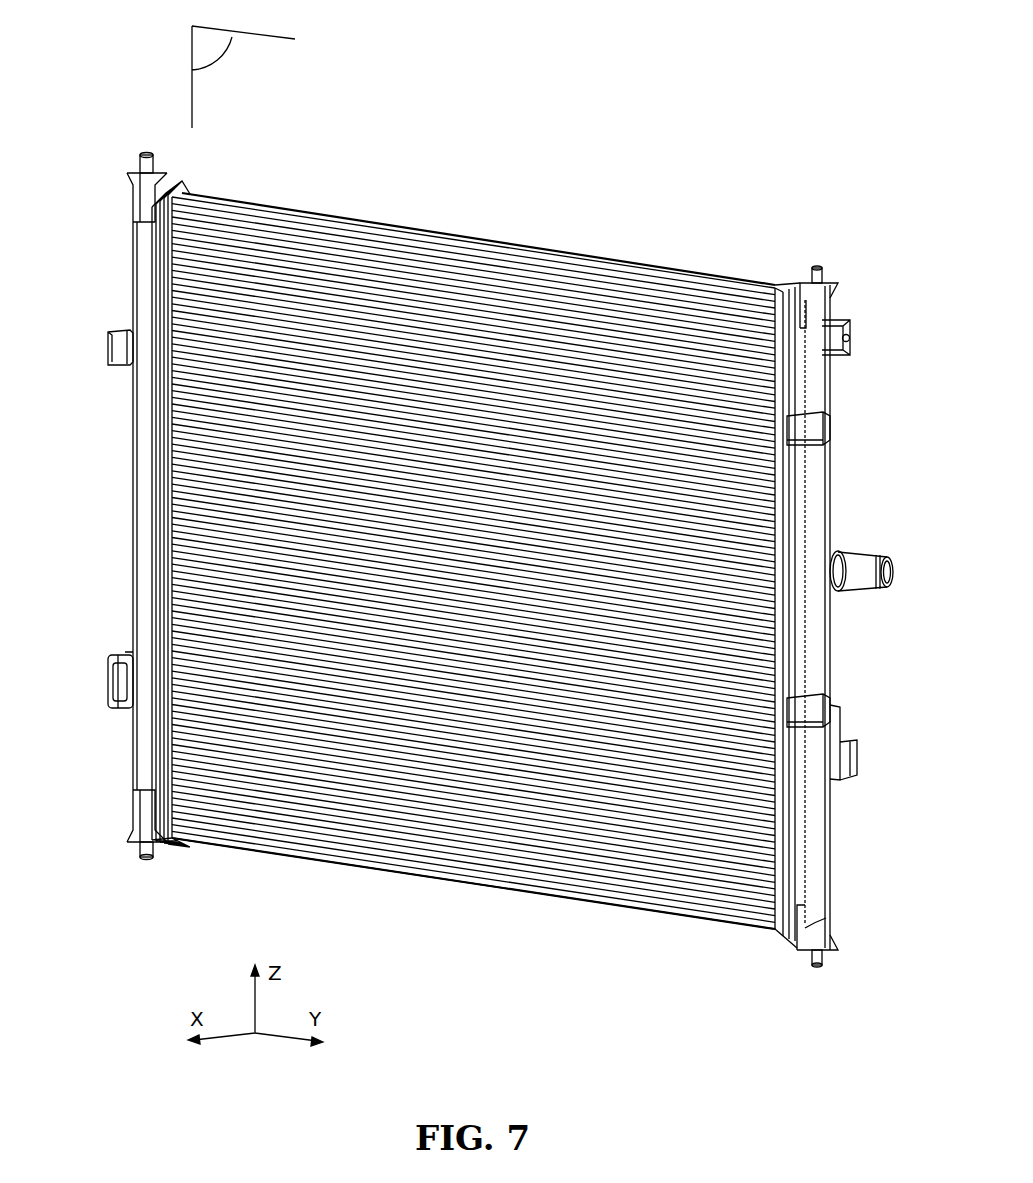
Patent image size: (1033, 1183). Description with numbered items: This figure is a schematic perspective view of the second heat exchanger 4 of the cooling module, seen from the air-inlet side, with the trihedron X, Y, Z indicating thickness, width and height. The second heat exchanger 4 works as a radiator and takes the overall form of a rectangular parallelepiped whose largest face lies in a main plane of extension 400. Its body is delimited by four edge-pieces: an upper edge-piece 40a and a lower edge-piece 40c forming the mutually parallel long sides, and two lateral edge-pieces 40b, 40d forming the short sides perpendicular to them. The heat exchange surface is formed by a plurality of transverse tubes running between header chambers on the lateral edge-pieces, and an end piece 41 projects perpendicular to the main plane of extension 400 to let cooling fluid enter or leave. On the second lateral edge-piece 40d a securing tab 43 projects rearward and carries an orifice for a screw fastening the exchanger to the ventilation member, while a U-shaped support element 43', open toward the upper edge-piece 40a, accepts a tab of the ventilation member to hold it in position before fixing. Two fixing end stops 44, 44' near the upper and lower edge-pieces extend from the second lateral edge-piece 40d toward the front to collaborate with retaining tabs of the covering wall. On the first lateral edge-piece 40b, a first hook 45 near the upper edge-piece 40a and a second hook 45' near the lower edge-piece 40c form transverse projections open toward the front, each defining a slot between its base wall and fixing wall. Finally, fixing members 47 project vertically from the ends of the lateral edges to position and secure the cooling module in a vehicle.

The main plane of extension 400 is at (218, 60).
The second heat exchanger 4 is at (793, 212).
The upper edge-piece 40a is at (486, 238).
The first lateral edge-piece 40b is at (151, 509).
The lower edge-piece 40c is at (478, 888).
The second lateral edge-piece 40d is at (797, 836).
The end piece 41 is at (860, 563).
The securing tab 43 is at (873, 337).
The support element 43' is at (882, 742).
The fixing end stop 44 is at (838, 423).
The fixing end stop 44' is at (843, 700).
The first hook 45 is at (83, 347).
The second hook 45' is at (80, 680).
The fixing member 47 is at (139, 165).